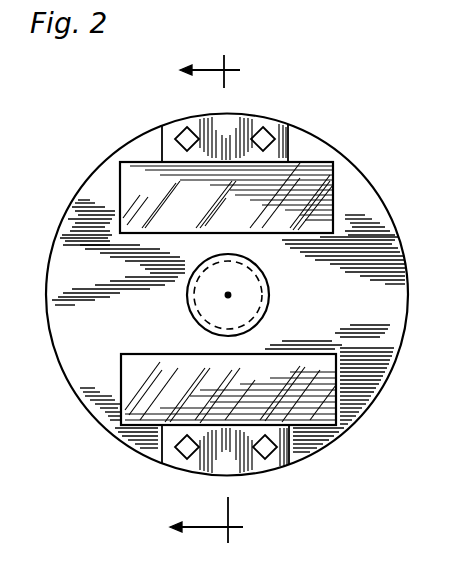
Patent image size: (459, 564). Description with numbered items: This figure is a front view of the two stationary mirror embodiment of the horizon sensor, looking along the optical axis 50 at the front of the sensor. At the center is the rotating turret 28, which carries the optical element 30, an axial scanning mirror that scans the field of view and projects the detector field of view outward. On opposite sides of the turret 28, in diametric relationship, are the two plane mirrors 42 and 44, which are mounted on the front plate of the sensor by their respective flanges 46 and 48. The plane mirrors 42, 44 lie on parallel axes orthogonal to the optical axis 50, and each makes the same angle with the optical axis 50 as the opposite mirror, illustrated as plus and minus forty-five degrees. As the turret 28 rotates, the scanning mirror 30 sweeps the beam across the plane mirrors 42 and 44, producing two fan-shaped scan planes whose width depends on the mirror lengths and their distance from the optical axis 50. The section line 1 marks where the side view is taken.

The section line 1- 1 is at (194, 299).
The turret 28 is at (265, 317).
The optical element 30 is at (263, 280).
The plane mirror 42 is at (121, 383).
The plane mirror 44 is at (335, 181).
The flange 46 is at (290, 442).
The flange 48 is at (276, 133).
The optical axis 50 is at (228, 295).